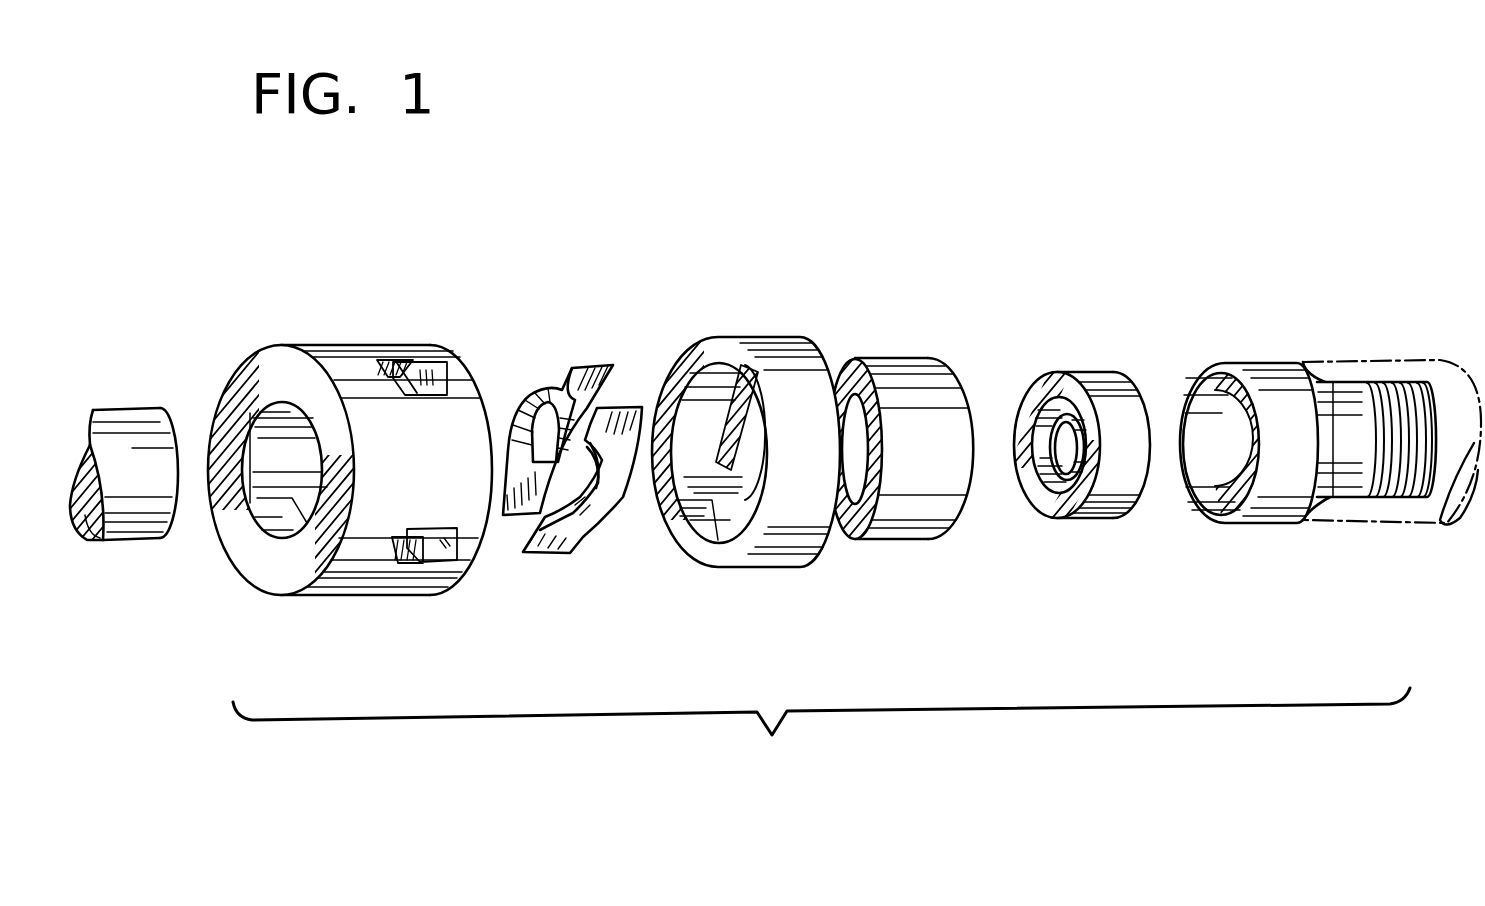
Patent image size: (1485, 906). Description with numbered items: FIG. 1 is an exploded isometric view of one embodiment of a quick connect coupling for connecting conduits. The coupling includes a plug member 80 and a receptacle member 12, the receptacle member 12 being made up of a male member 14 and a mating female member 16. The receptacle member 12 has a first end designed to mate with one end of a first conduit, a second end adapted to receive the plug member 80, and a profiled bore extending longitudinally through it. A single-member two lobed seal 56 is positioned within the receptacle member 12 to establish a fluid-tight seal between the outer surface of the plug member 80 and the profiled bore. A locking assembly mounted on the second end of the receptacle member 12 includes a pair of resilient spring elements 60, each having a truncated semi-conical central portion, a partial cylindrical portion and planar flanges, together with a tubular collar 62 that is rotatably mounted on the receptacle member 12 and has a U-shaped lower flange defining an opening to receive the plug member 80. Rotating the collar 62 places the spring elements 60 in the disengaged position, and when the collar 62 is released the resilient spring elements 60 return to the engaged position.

The receptacle member 12 is at (821, 737).
The male member 14 is at (1247, 363).
The female member 16 is at (756, 337).
The two lobed seal 56 is at (1080, 372).
The resilient spring elements 60 is at (545, 390).
The tubular collar 62 is at (317, 345).
The plug member 80 is at (133, 408).